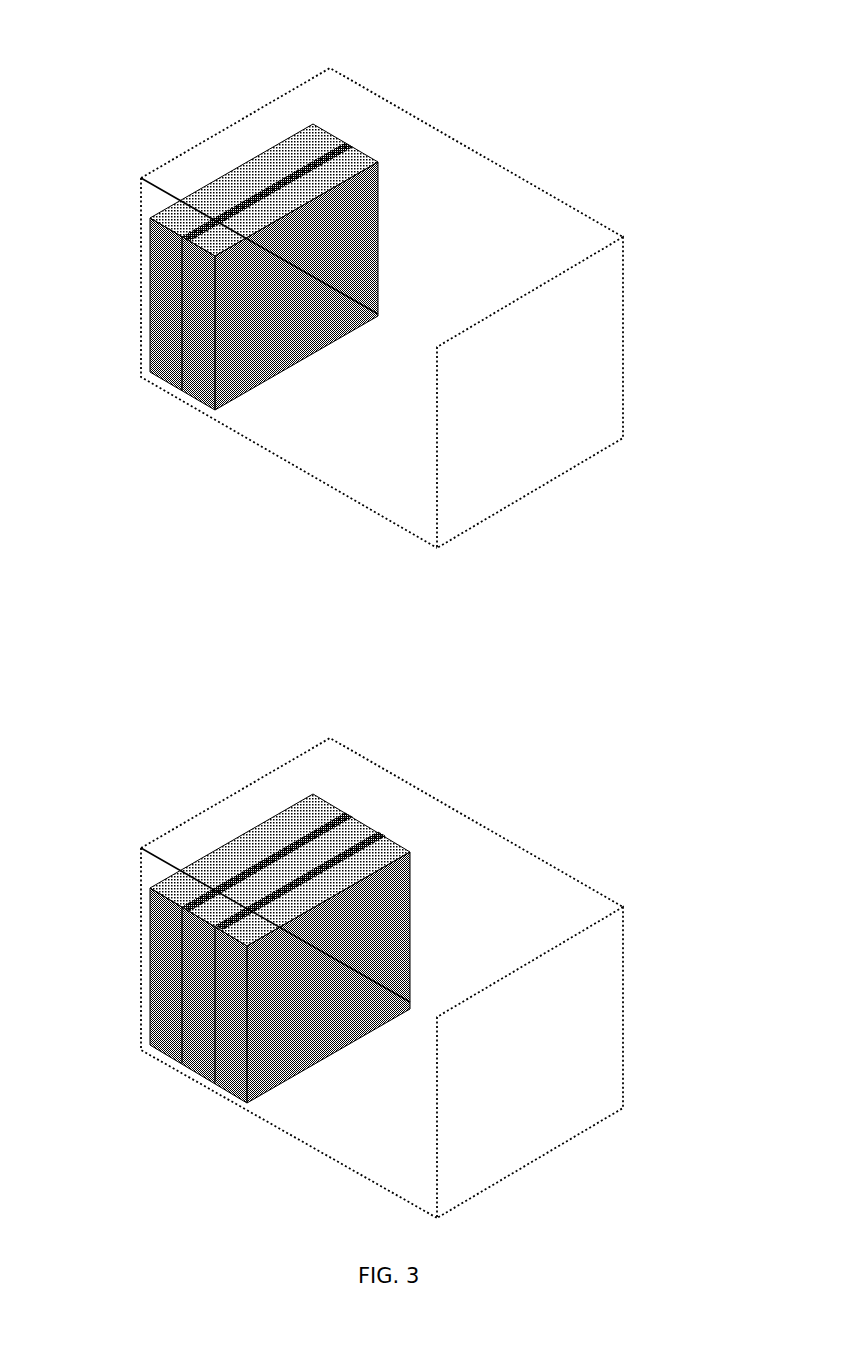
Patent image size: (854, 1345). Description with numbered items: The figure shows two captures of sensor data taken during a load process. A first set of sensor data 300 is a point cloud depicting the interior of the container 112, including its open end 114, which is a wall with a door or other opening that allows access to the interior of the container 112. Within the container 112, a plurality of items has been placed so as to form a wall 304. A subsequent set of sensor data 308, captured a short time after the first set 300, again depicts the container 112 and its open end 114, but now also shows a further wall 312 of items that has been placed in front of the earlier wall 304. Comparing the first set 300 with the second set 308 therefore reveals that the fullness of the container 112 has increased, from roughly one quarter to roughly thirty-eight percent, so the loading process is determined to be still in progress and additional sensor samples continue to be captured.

The first set of sensor data 300 is at (151, 91).
The wall 304 is at (203, 357).
The subsequent set of sensor data 308 is at (149, 818).
The wall 312 is at (237, 1052).
The container 112 is at (595, 223).
The open end 114 is at (623, 397).